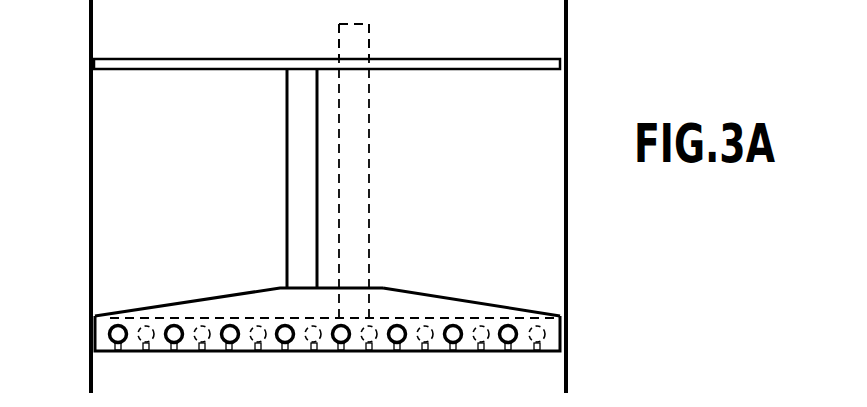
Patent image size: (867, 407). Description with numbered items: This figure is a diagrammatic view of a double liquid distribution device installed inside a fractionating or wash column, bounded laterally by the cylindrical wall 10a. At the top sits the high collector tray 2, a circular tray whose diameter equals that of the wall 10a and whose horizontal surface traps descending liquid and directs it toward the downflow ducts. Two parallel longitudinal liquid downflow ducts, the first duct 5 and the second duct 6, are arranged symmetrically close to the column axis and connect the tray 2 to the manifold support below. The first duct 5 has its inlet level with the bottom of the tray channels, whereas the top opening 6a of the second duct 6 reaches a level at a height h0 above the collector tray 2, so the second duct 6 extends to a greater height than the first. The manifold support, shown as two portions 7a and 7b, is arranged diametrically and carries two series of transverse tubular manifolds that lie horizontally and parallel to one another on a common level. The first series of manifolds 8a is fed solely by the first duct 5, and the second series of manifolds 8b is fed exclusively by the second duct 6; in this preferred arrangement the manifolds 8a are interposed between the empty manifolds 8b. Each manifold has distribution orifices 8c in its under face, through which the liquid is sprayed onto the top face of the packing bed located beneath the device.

The high collector tray 2 is at (250, 58).
The first liquid downflow duct 5 is at (297, 152).
The second liquid downflow duct 6 is at (358, 156).
The top opening of the second duct 6a is at (357, 39).
The manifold support 7a is at (250, 290).
The manifold support 7b is at (450, 317).
The first series of manifolds 8a is at (122, 325).
The second series of manifolds 8b is at (204, 325).
The distribution orifices 8c is at (118, 354).
The cylindrical wall 10a is at (89, 170).